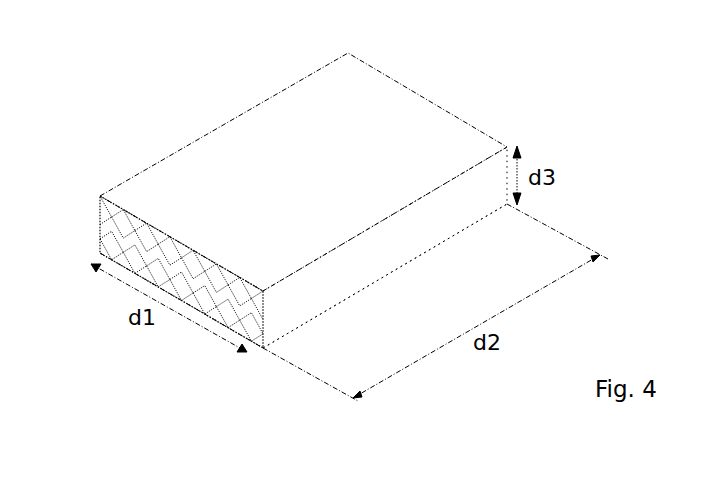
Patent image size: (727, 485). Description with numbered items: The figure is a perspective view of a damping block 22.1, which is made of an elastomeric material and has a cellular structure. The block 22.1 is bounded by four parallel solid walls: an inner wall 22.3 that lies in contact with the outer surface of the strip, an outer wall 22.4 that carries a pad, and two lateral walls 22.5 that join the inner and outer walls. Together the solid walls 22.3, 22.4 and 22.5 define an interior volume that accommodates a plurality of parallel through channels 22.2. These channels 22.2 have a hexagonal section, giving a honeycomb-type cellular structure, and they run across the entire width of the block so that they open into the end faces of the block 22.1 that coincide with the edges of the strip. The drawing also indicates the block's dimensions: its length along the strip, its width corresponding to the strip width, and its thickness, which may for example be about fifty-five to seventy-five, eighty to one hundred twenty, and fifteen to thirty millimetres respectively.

The damping block 22.1 is at (278, 247).
The through channels 22.2 is at (140, 250).
The inner wall 22.3 is at (229, 326).
The outer wall 22.4 is at (373, 93).
The lateral walls 22.5 is at (480, 190).